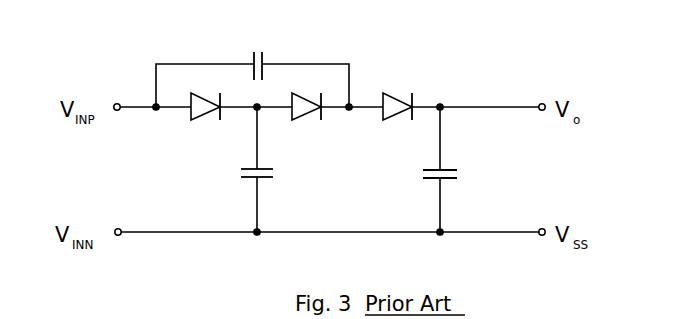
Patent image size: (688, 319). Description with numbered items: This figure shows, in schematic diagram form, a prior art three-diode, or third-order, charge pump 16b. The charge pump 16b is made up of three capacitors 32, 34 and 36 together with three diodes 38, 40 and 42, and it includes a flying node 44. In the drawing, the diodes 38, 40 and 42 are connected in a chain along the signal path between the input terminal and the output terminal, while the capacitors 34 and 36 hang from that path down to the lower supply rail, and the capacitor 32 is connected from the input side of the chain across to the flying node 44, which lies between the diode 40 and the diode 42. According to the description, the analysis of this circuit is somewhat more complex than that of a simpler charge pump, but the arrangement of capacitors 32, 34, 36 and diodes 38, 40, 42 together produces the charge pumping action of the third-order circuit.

The 3-diode charge pump 16b is at (256, 258).
The capacitor 32 is at (252, 55).
The capacitor 34 is at (275, 173).
The capacitor 36 is at (423, 174).
The diode 38 is at (207, 114).
The diode 40 is at (307, 114).
The diode 42 is at (395, 114).
The flying node 44 is at (349, 112).